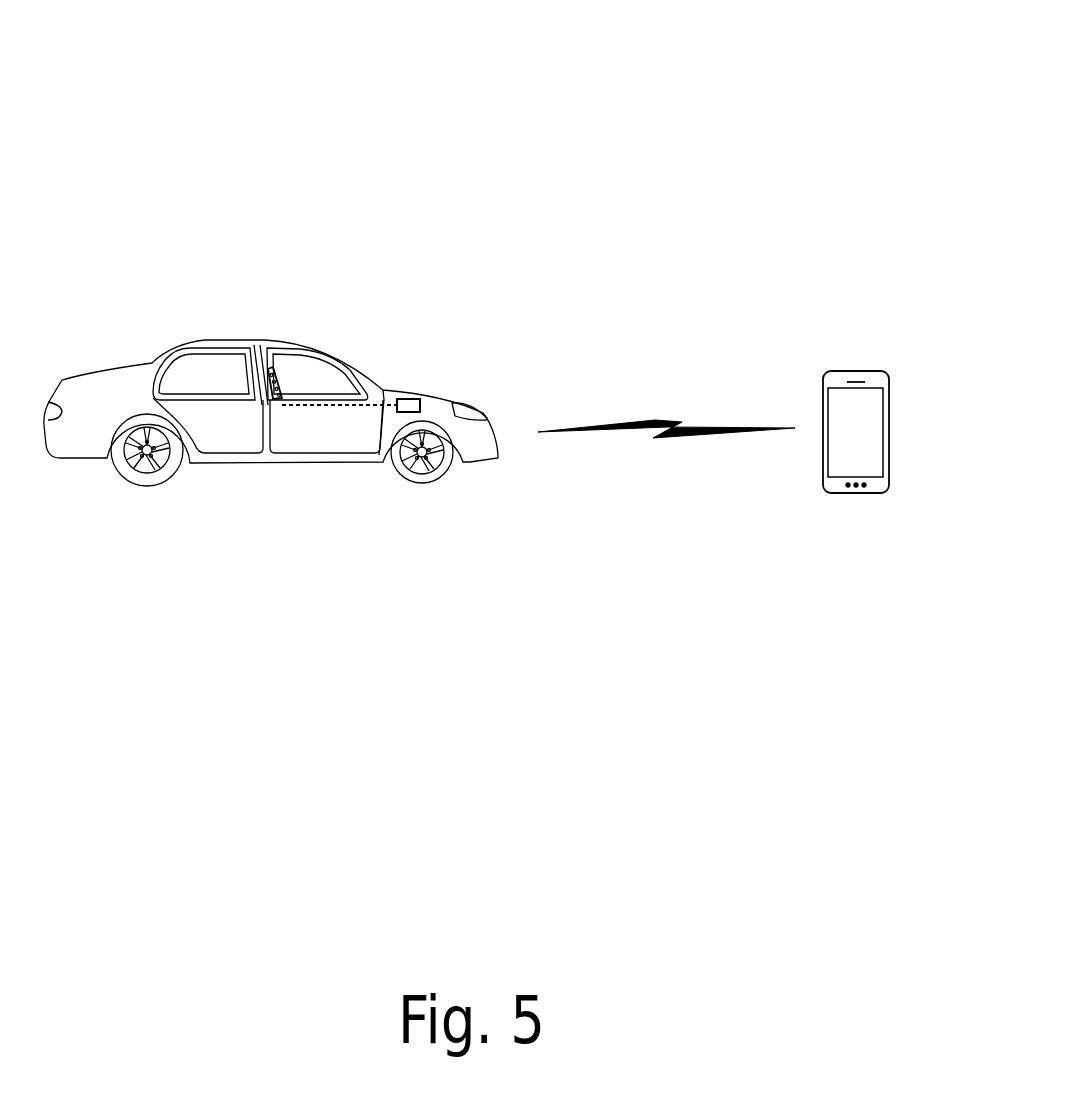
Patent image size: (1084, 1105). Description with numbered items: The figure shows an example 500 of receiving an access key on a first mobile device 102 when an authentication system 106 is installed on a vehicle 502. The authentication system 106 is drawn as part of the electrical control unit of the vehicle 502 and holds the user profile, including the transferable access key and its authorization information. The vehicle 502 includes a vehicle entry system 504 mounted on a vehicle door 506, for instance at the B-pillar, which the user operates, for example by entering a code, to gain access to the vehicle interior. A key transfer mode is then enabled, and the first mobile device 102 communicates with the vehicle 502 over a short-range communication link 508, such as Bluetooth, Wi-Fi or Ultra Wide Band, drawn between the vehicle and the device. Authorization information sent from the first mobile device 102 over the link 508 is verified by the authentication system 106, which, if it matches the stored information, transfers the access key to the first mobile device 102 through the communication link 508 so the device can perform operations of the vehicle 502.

The example 500 is at (514, 60).
The vehicle 502 is at (182, 348).
The vehicle entry system 504 is at (277, 375).
The vehicle door 506 is at (298, 432).
The authentication system 106 is at (404, 413).
The short-range communication link 508 is at (653, 422).
The first mobile device 102 is at (858, 372).